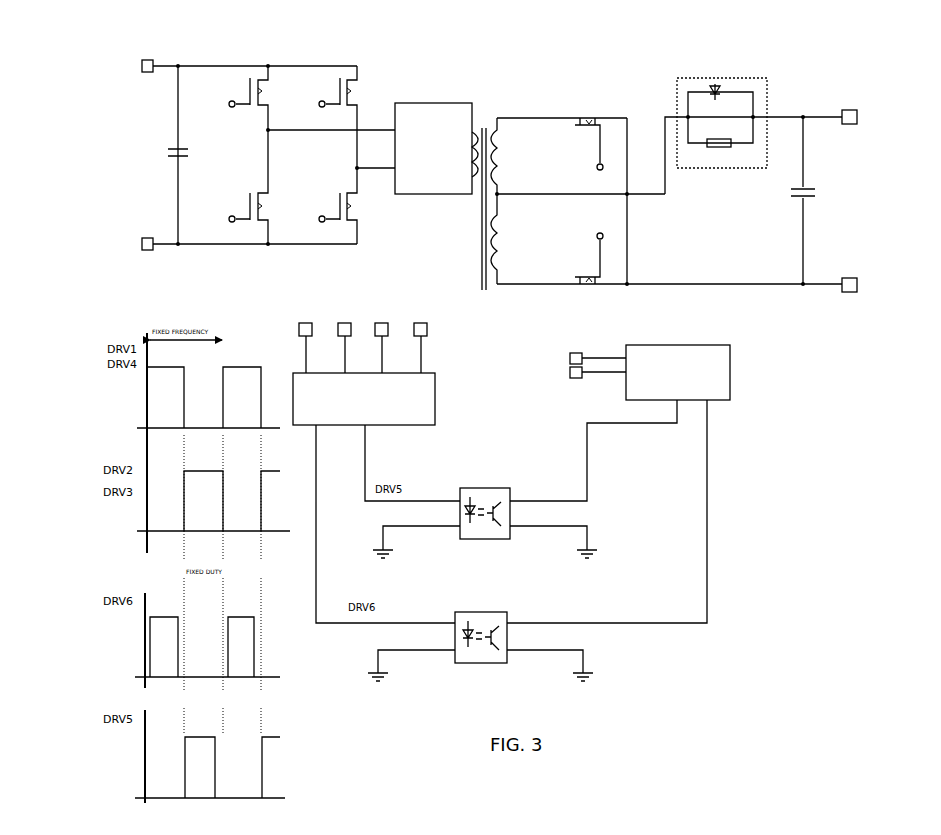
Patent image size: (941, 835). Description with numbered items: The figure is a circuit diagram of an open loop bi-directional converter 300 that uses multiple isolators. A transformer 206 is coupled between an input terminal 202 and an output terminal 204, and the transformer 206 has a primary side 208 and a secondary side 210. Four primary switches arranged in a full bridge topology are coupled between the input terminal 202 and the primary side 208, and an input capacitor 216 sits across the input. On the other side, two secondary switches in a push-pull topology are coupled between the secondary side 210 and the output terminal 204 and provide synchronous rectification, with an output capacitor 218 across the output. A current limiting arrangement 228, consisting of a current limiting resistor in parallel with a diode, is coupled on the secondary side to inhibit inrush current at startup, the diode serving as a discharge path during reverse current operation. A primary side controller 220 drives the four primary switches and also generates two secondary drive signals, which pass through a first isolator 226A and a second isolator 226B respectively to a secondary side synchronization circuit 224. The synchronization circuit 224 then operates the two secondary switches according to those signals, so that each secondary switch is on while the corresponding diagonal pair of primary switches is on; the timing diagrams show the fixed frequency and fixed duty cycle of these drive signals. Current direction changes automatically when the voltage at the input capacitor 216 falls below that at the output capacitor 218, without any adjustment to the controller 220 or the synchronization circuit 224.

The input terminal 202 is at (150, 73).
The output terminal 204 is at (849, 122).
The transformer 206 is at (489, 116).
The primary side 208 is at (462, 103).
The secondary side 210 is at (515, 118).
The input capacitor 216 is at (164, 157).
The output capacitor 218 is at (793, 197).
The primary side controller 220 is at (437, 393).
The secondary side synchronization circuit 224 is at (723, 402).
The isolator 226A is at (490, 541).
The isolator 226B is at (482, 665).
The current limiting arrangement 228 is at (725, 168).
The open loop bi-directional converter 300 is at (502, 235).